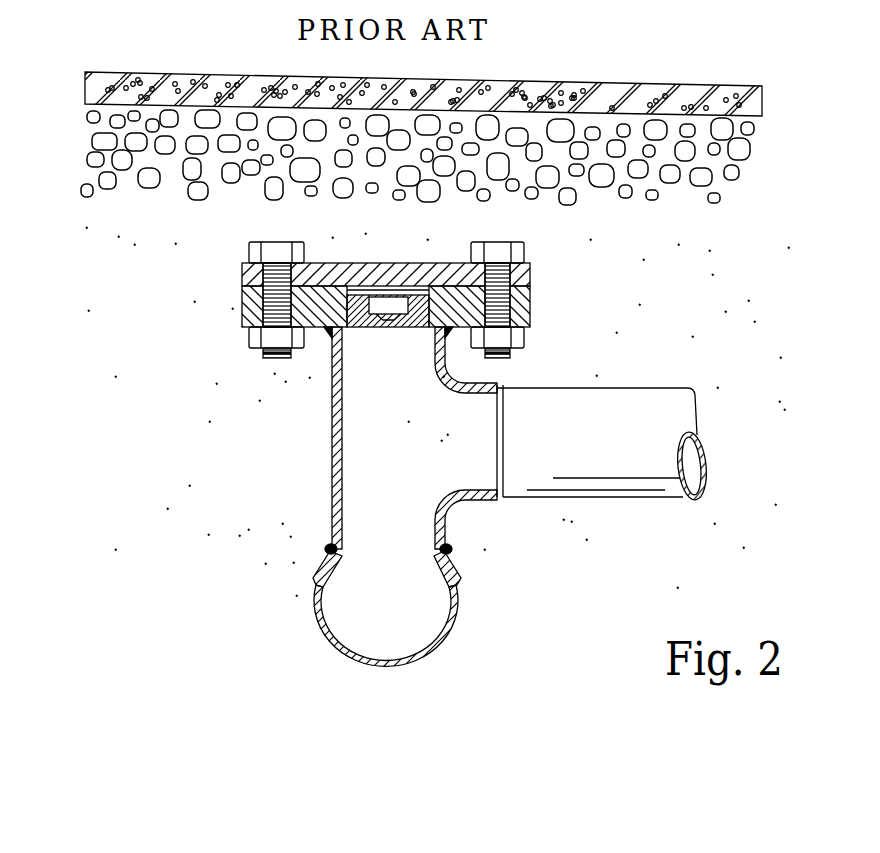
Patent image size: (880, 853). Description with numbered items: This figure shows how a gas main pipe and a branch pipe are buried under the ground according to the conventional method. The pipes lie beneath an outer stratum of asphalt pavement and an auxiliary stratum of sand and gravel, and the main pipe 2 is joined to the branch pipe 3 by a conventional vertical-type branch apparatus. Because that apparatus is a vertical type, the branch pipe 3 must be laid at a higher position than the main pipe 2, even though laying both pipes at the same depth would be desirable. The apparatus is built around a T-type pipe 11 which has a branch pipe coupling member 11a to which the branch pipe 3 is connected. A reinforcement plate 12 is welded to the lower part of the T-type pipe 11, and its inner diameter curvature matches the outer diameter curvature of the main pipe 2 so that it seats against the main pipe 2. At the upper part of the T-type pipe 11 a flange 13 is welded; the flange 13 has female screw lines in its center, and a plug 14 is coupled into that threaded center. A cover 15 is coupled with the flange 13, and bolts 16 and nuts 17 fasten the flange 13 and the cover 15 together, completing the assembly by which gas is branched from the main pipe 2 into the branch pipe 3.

The main pipe 2 is at (410, 668).
The branch pipe 3 is at (653, 490).
The T-type pipe 11 is at (332, 460).
The branch pipe coupling member 11a is at (477, 495).
The reinforcement plate 12 is at (311, 572).
The flange 13 is at (240, 310).
The plug 14 is at (433, 268).
The cover 15 is at (338, 263).
The bolts 16 is at (247, 250).
The nuts 17 is at (245, 340).